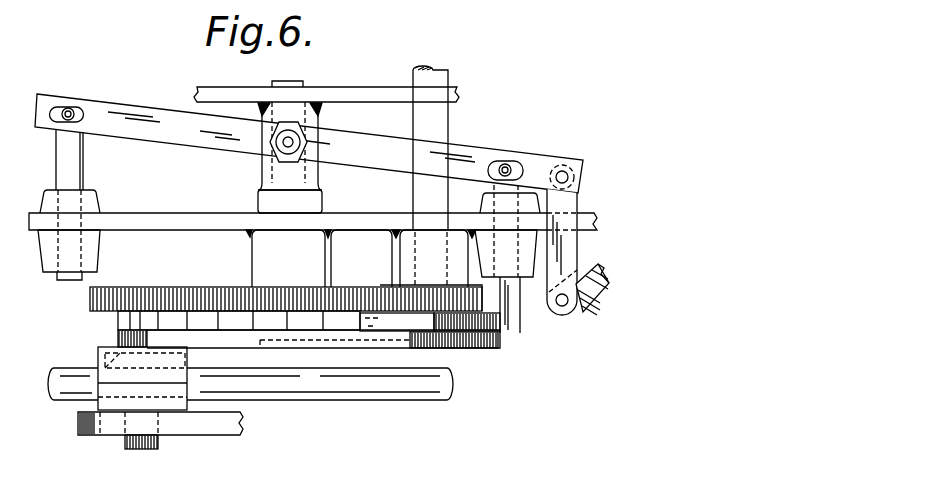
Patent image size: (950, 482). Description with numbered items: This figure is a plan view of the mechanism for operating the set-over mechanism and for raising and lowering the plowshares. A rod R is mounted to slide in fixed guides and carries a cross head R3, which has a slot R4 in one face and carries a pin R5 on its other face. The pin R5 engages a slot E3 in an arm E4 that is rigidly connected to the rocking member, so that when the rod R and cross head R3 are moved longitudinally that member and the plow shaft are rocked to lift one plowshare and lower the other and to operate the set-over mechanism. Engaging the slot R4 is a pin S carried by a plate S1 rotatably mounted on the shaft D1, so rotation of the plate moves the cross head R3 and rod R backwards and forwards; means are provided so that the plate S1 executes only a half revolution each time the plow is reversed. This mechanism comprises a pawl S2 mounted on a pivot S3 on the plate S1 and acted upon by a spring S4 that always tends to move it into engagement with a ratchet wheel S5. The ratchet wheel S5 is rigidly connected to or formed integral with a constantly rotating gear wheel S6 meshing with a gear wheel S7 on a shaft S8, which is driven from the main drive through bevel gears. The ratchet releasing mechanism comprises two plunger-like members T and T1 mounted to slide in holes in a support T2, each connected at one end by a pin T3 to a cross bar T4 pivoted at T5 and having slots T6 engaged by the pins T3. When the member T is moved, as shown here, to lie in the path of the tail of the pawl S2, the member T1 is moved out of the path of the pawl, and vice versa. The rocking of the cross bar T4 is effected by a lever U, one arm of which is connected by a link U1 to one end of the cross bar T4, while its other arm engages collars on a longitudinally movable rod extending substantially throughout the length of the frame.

The shaft D1 is at (298, 82).
The shaft S8 is at (441, 76).
The plunger-like member T1 is at (60, 166).
The support T2 is at (141, 222).
The plunger-like member T is at (517, 294).
The cross bar T4 is at (172, 120).
The slot T6 is at (85, 114).
The pin T3 is at (60, 105).
The pivot T5 is at (281, 145).
The link U1 is at (568, 264).
The lever U is at (605, 289).
The gear wheel S6 is at (178, 292).
The gear wheel S7 is at (410, 288).
The ratchet wheel S5 is at (131, 322).
The spring S4 is at (411, 323).
The pivot S3 is at (469, 350).
The plate S1 is at (120, 333).
The pawl S2 is at (501, 334).
The cross head R3 is at (167, 376).
The pin S is at (100, 353).
The slot R4 is at (63, 398).
The rod R is at (340, 384).
The arm E4 is at (219, 428).
The slot E3 is at (83, 438).
The pin R5 is at (140, 449).